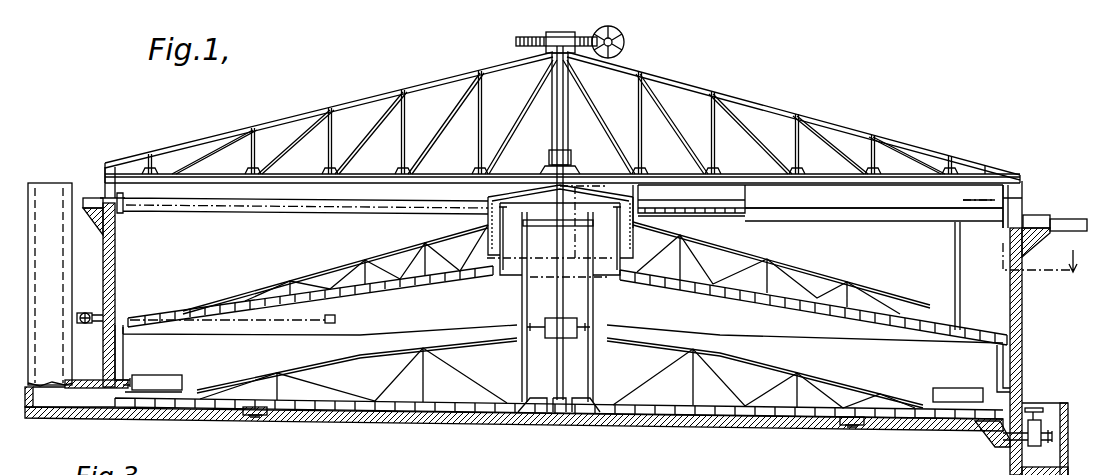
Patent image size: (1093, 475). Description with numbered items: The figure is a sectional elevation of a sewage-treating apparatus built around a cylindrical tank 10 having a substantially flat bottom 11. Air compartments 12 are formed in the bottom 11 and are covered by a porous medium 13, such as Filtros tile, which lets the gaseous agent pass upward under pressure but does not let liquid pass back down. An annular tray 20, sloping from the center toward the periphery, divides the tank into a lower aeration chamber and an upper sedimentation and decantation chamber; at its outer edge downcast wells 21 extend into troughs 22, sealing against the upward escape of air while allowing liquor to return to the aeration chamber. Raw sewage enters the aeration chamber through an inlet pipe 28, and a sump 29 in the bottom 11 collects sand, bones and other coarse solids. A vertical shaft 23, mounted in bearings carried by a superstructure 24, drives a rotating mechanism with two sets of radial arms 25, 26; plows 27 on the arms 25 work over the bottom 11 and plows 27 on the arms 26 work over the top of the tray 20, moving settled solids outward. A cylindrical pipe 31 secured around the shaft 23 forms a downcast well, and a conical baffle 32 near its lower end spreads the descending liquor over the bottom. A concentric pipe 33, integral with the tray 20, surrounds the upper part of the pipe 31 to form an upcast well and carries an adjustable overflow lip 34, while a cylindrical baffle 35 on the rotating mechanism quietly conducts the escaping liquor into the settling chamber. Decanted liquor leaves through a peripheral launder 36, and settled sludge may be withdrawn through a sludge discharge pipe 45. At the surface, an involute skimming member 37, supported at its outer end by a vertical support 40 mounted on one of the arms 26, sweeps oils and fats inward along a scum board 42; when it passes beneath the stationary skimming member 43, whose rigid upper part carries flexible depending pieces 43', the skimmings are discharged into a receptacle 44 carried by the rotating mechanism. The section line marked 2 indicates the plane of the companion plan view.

The section line 2 is at (1045, 256).
The tank 10 is at (116, 268).
The bottom 11 is at (641, 427).
The air compartments 12 is at (258, 420).
The porous medium 13 is at (250, 418).
The tray 20 is at (440, 283).
The downcast wells 21 is at (123, 334).
The troughs 22 is at (173, 376).
The shaft 23 is at (568, 140).
The superstructure 24 is at (768, 110).
The radial arms 25 is at (411, 400).
The radial arms 26 is at (344, 281).
The plows 27 is at (756, 298).
The inlet pipe 28 is at (62, 410).
The sump 29 is at (1003, 440).
The pipe 31 is at (598, 312).
The baffle 32 is at (573, 400).
The pipe 33 is at (516, 270).
The overflow lip 34 is at (509, 211).
The baffle 35 is at (550, 226).
The peripheral launder 36 is at (1030, 215).
The skimming member 37 is at (893, 222).
The vertical support 40 is at (961, 294).
The scum board 42 is at (219, 209).
The stationary skimming member 43 is at (818, 206).
The depending pieces 43' is at (740, 232).
The receptacle 44 is at (727, 248).
The sludge discharge pipe 45 is at (92, 312).